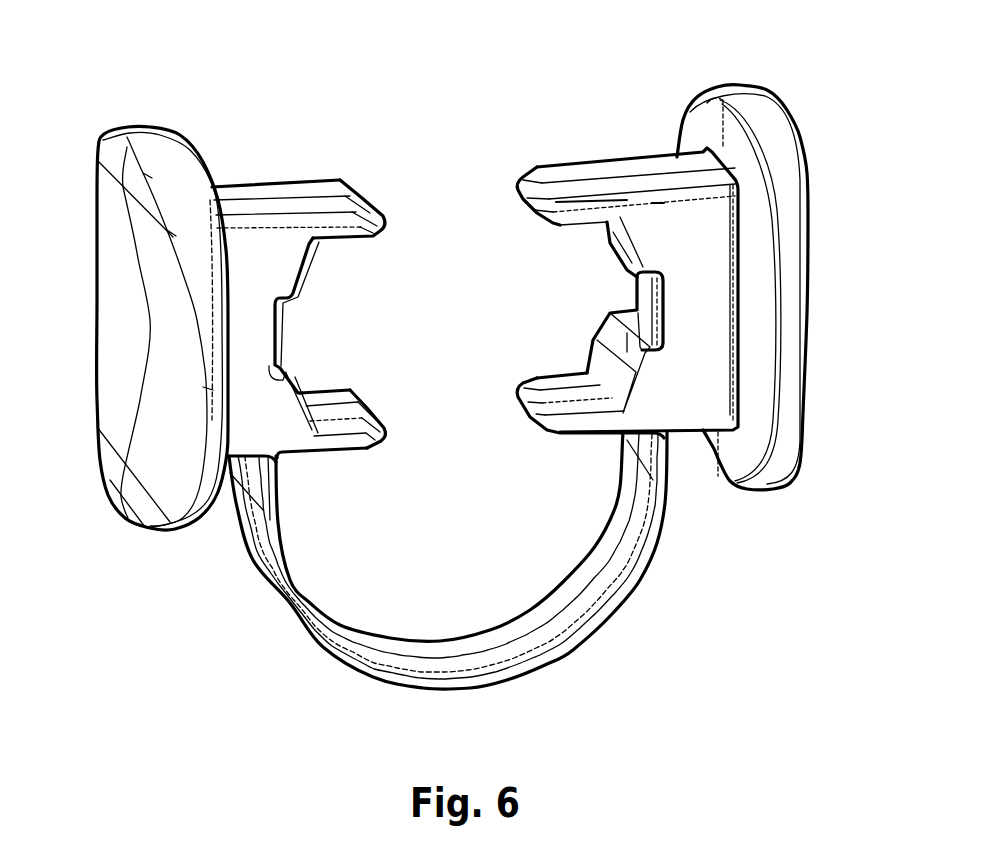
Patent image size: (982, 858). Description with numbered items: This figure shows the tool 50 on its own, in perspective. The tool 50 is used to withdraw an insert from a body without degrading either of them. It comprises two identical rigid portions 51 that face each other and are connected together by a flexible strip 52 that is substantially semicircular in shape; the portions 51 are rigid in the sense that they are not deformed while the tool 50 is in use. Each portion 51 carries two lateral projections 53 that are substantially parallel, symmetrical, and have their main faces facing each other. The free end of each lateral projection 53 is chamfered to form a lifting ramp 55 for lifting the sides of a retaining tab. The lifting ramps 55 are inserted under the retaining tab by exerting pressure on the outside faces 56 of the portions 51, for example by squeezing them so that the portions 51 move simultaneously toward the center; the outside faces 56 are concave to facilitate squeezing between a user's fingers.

The tool 50 is at (759, 88).
The rigid portion 51 is at (262, 240).
The flexible strip 52 is at (537, 640).
The lateral projection 53 is at (347, 238).
The lifting ramp 55 is at (370, 200).
The outside face 56 is at (113, 327).